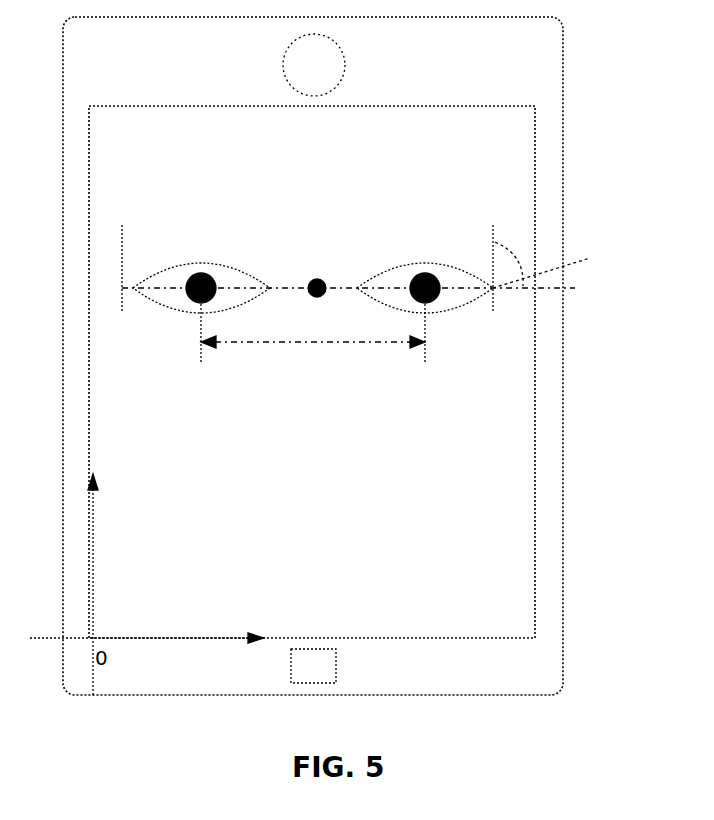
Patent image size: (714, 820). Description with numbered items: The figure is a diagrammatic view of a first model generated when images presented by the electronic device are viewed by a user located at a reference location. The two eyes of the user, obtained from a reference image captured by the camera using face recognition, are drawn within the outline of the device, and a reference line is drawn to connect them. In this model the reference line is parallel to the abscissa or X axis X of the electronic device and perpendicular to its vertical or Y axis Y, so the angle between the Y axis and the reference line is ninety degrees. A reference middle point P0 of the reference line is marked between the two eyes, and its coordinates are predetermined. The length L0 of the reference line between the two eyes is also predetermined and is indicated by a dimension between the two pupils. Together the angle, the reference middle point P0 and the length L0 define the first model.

The reference middle point P0 is at (313, 279).
The length of the reference line L0 is at (313, 341).
The X axis X is at (147, 651).
The Y axis Y is at (84, 584).